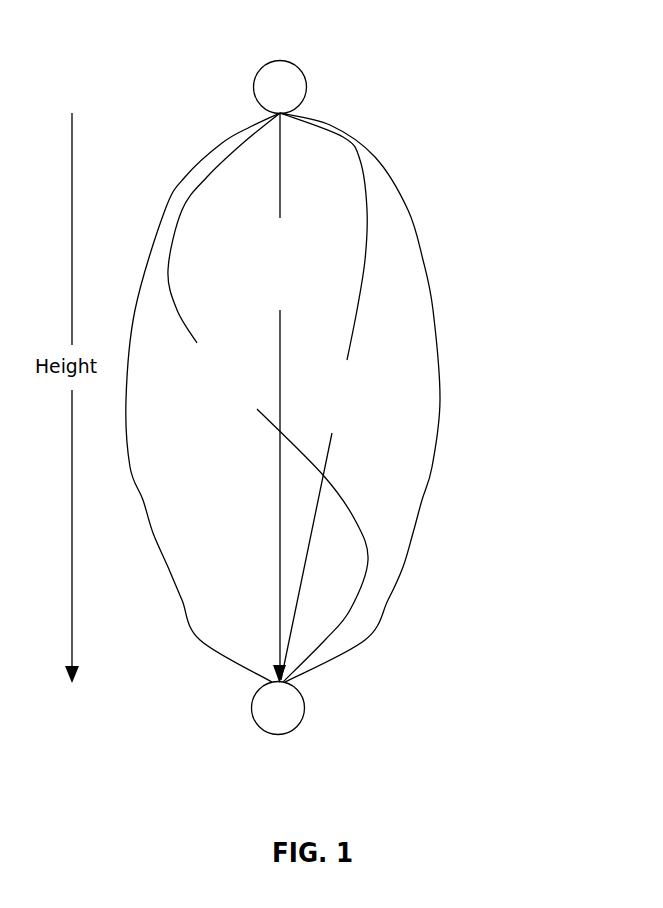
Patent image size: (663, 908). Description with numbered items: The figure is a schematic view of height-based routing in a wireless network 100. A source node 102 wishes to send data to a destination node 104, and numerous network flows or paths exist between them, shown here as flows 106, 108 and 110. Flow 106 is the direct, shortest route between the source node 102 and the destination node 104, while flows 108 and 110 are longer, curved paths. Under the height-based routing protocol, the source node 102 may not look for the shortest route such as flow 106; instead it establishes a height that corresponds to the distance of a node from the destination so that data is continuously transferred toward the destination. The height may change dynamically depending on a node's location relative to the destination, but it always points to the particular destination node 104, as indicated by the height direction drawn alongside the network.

The wireless network 100 is at (424, 217).
The source node 102 is at (283, 69).
The destination node 104 is at (298, 719).
The flow 106 is at (265, 398).
The flow 108 is at (268, 397).
The flow 110 is at (331, 396).